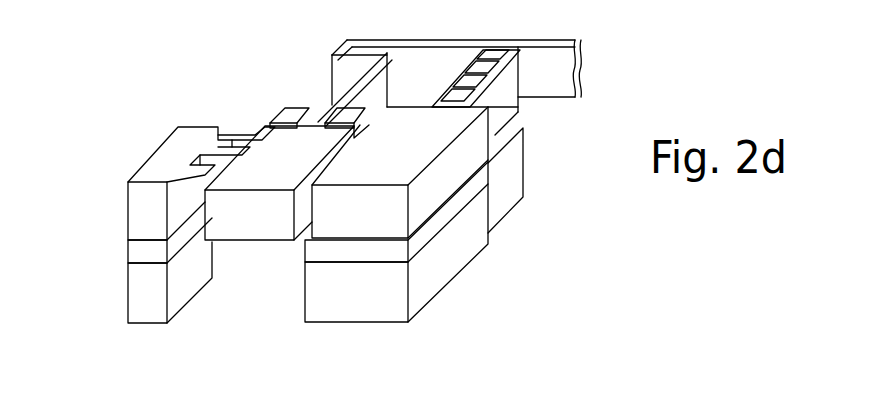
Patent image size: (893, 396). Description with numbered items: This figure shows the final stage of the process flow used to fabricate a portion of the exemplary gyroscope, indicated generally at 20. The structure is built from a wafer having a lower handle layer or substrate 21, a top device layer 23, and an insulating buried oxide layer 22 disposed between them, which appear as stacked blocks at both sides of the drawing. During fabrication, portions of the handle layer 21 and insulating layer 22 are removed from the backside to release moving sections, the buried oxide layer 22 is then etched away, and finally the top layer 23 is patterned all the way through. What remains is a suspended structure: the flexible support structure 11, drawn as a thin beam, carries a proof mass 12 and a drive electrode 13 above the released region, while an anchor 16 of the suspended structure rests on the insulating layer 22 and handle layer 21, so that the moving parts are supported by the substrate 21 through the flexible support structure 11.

The connector assembly 20 is at (118, 122).
The flexible support structure 11 is at (350, 80).
The proof mass 12 is at (233, 232).
The drive electrode 13 is at (180, 138).
The anchor 16 is at (340, 227).
The handle layer 21 is at (142, 290).
The insulating layer 22 is at (140, 253).
The device layer 23 is at (140, 213).